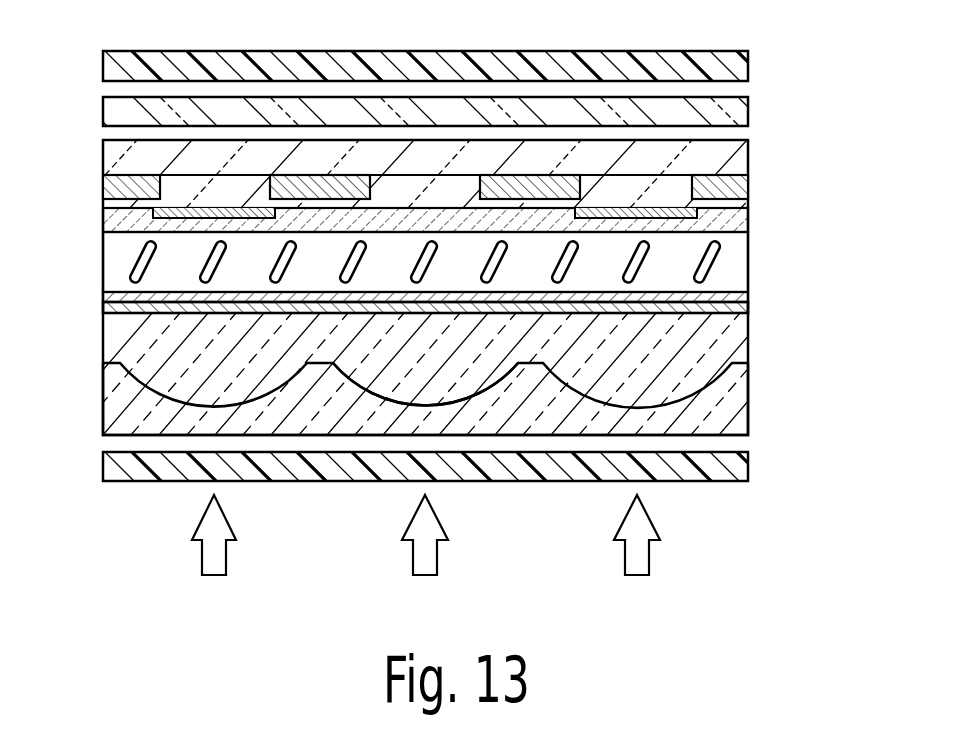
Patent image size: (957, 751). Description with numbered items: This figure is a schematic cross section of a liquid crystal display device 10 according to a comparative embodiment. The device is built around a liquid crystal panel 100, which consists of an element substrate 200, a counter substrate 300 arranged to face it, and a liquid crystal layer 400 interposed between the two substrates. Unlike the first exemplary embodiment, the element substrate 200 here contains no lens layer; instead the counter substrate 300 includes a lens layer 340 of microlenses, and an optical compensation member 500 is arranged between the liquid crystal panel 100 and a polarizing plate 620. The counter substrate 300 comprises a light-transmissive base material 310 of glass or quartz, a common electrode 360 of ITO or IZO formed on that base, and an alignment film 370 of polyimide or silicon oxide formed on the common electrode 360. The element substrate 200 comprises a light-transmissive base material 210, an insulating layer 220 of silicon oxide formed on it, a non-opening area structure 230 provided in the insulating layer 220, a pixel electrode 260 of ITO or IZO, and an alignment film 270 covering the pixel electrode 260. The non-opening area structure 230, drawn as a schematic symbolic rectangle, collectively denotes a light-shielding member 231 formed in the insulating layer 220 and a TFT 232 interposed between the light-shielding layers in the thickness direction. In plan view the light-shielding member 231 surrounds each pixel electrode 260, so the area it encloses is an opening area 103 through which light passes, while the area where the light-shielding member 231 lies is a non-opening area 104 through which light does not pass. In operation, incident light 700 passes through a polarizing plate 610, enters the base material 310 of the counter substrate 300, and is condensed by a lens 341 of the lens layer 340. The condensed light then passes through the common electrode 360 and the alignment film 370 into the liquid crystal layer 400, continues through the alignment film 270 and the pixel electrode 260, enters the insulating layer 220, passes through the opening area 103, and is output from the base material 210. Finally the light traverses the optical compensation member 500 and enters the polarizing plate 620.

The liquid crystal display device 10 is at (56, 359).
The liquid crystal panel 100 is at (88, 142).
The opening area 103 is at (423, 182).
The non-opening area 104 is at (520, 158).
The element substrate 200 is at (830, 182).
The base material 210 is at (748, 150).
The insulating layer 220 is at (748, 203).
The non-opening area structure 230 is at (748, 184).
The light-shielding member 231 is at (528, 207).
The TFT 232 is at (530, 187).
The pixel electrode 260 is at (748, 222).
The alignment film 270 is at (748, 240).
The counter substrate 300 is at (831, 353).
The base material 310 is at (748, 405).
The lens layer 340 is at (748, 349).
The lens 341 is at (378, 397).
The common electrode 360 is at (748, 311).
The alignment film 370 is at (748, 297).
The liquid crystal layer 400 is at (745, 270).
The optical compensation member 500 is at (748, 110).
The polarizing plate 610 is at (748, 466).
The polarizing plate 620 is at (748, 66).
The incident light 700 is at (438, 555).